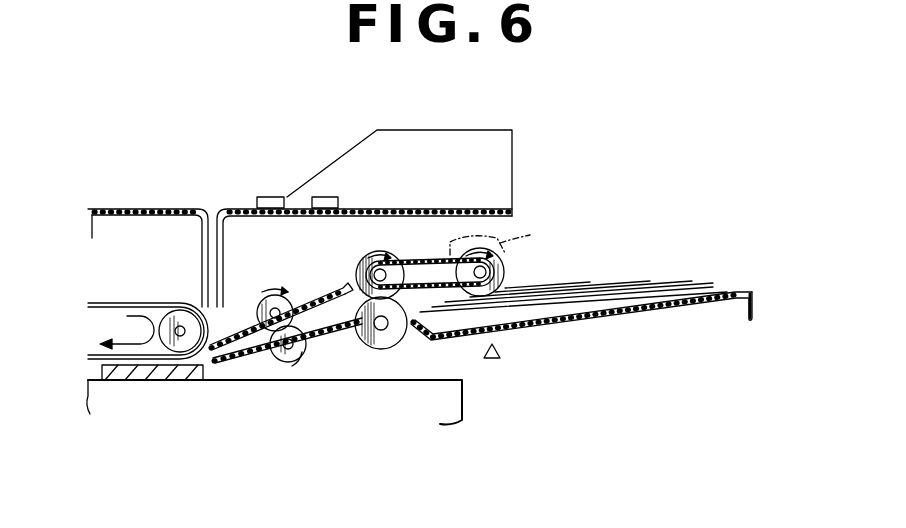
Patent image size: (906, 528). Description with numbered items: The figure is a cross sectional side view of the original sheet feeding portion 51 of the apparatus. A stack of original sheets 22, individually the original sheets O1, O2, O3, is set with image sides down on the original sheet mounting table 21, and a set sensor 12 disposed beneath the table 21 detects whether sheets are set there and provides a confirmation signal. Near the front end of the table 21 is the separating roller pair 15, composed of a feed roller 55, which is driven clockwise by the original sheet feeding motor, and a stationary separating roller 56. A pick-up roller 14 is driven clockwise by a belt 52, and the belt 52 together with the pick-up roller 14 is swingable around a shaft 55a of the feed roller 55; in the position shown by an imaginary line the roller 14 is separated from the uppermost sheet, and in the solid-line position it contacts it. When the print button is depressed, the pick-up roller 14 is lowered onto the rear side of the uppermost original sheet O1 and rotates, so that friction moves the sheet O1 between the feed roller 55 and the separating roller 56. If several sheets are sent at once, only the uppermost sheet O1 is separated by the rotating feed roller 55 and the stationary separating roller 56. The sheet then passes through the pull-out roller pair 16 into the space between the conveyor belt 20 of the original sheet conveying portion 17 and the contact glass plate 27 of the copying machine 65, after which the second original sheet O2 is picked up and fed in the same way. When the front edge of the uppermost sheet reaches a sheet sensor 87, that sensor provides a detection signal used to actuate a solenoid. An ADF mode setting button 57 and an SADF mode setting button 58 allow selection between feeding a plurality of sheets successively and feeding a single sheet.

The set sensor 12 is at (492, 360).
The pick-up roller 14 is at (503, 263).
The separating roller pair 15 is at (380, 240).
The pull-out roller pair 16 is at (290, 375).
The original sheet conveying portion 17 is at (144, 200).
The conveyor belt 20 is at (134, 300).
The original sheet mounting table 21 is at (597, 320).
The original sheets 22 is at (728, 245).
The contact glass plate 27 is at (142, 373).
The original sheet feeding portion 51 is at (532, 162).
The belt 52 is at (437, 262).
The feed roller 55 is at (358, 262).
The shaft of the feed roller 55a is at (397, 262).
The separating roller 56 is at (402, 343).
The ADF mode setting button 57 is at (268, 197).
The SADF mode setting button 58 is at (325, 197).
The copying machine 65 is at (455, 410).
The sheet sensor 87 is at (340, 284).
The uppermost original sheet O1 is at (582, 282).
The second original sheet O2 is at (632, 282).
The third original sheet O3 is at (672, 282).